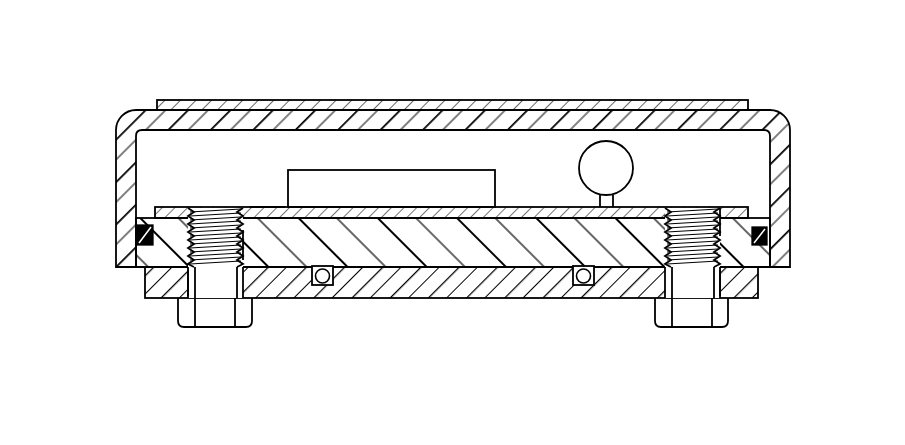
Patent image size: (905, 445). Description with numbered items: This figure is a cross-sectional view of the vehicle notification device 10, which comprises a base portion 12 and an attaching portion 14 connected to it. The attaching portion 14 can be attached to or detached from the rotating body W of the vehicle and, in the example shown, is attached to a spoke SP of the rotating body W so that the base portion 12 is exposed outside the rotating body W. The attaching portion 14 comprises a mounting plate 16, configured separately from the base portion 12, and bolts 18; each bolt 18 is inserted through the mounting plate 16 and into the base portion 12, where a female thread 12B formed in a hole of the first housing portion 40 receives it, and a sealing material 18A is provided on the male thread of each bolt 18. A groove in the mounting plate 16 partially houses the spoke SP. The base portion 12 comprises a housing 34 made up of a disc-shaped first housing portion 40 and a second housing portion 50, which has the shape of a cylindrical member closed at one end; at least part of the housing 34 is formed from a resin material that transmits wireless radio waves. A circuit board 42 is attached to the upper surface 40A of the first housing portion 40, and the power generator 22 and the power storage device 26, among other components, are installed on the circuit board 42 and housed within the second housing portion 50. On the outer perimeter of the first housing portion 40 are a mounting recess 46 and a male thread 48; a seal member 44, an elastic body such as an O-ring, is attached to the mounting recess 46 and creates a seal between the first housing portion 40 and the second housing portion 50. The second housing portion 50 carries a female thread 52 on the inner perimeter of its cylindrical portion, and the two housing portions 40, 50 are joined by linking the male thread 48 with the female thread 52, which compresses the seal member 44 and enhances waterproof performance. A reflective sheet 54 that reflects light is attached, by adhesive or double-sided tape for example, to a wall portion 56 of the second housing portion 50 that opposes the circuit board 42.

The vehicle notification device 10 is at (100, 57).
The base portion 12 is at (100, 118).
The female thread 12B is at (188, 288).
The attaching portion 14 is at (504, 219).
The mounting plate 16 is at (758, 281).
The bolt 18 is at (220, 328).
The sealing material 18A is at (245, 252).
The power generator 22 is at (378, 170).
The power storage device 26 is at (634, 168).
The housing 34 is at (76, 155).
The first housing portion 40 is at (137, 214).
The upper surface 40A is at (267, 207).
The circuit board 42 is at (545, 207).
The seal member 44 is at (768, 246).
The mounting recess 46 is at (772, 230).
The male thread 48 is at (137, 240).
The second housing portion 50 is at (117, 158).
The female thread 52 is at (137, 262).
The reflective sheet 54 is at (432, 99).
The wall portion 56 is at (205, 126).
The spoke SP is at (322, 284).
The rotating body W is at (483, 307).